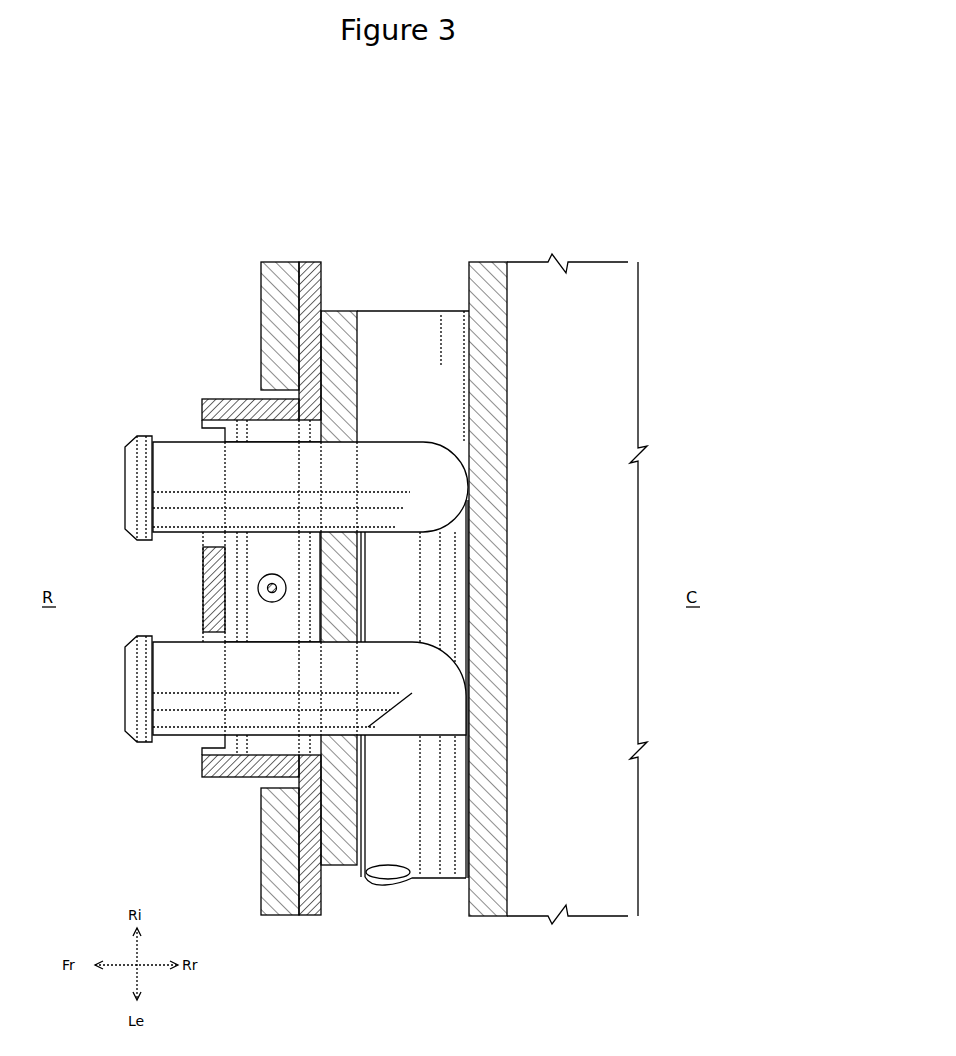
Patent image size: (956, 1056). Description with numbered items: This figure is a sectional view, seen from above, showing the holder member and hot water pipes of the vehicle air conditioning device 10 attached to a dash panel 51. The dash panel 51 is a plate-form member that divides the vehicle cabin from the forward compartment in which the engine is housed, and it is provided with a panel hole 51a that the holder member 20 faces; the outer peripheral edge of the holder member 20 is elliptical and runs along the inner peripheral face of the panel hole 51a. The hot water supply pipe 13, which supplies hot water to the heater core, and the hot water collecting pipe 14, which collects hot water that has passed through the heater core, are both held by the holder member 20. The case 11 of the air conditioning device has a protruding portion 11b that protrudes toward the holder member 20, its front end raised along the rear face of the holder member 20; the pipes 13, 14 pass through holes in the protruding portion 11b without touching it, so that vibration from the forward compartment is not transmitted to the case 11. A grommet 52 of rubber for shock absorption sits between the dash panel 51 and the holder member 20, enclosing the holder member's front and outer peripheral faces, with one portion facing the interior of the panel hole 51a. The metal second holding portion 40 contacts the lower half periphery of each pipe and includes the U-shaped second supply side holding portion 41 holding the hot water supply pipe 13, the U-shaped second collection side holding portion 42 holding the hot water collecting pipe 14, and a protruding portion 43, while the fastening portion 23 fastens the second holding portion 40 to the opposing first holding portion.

The vehicle air conditioning device 10 is at (604, 206).
The case 11 is at (414, 711).
The protruding portion 11b is at (345, 867).
The hot water supply pipe 13 is at (172, 736).
The hot water collecting pipe 14 is at (172, 441).
The holder member 20 is at (265, 835).
The fastening portion 23 is at (257, 591).
The second holding portion 40 is at (253, 778).
The second supply side holding portion 41 is at (268, 645).
The second collection side holding portion 42 is at (268, 444).
The protruding portion 43 is at (299, 553).
The dash panel 51 is at (262, 277).
The grommet 52 is at (322, 278).
The panel hole 51a is at (256, 395).